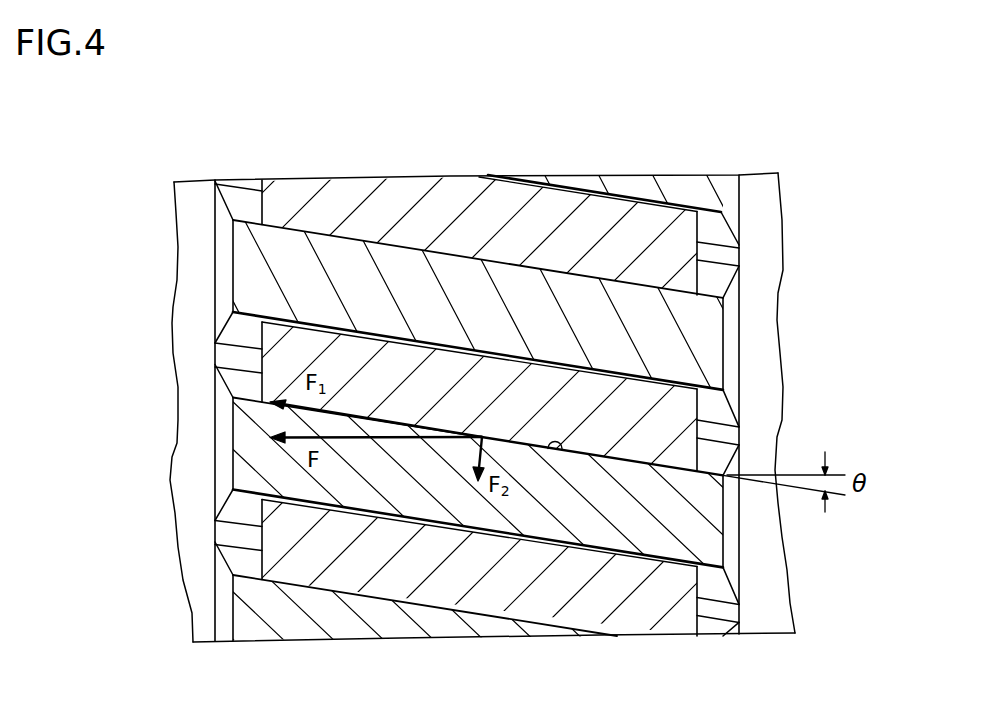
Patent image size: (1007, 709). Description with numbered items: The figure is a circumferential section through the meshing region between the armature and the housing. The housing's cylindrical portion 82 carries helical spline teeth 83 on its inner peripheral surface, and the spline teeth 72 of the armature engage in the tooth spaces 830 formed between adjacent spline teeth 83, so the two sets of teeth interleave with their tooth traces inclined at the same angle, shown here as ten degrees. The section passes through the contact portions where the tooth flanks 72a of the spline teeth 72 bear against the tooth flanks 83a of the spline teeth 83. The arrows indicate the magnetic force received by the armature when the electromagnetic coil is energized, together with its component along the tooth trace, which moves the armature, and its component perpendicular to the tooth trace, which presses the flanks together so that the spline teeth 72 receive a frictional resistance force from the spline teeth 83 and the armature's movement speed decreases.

The cylindrical portion 82 is at (190, 263).
The spline teeth 83 is at (680, 335).
The spline teeth 72 is at (673, 236).
The tooth spaces 830 is at (723, 433).
The tooth flanks 72a is at (612, 460).
The tooth flanks 83a is at (563, 447).